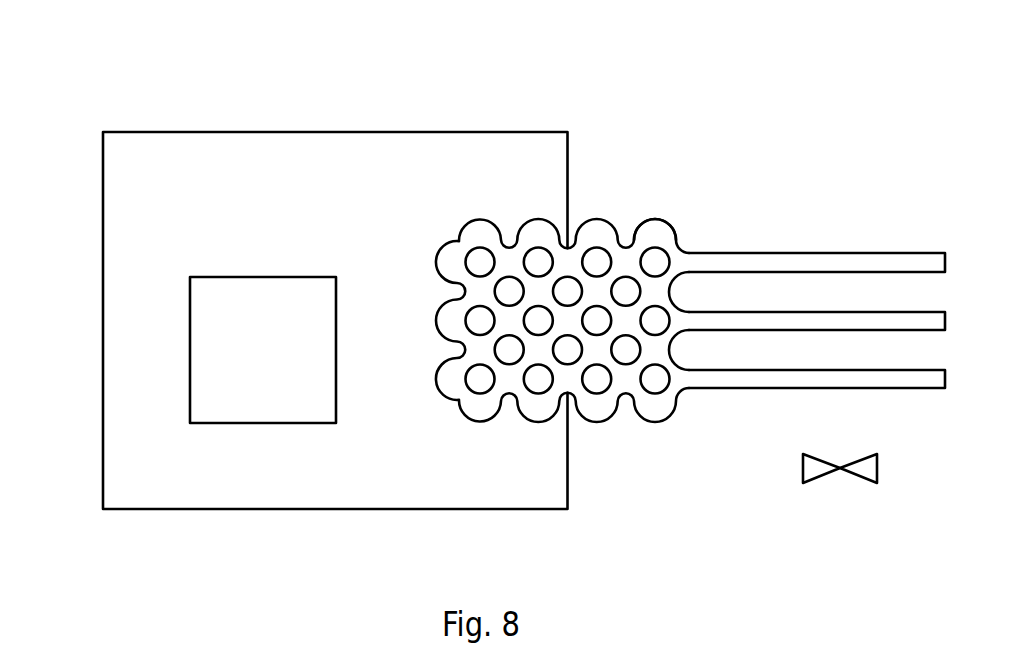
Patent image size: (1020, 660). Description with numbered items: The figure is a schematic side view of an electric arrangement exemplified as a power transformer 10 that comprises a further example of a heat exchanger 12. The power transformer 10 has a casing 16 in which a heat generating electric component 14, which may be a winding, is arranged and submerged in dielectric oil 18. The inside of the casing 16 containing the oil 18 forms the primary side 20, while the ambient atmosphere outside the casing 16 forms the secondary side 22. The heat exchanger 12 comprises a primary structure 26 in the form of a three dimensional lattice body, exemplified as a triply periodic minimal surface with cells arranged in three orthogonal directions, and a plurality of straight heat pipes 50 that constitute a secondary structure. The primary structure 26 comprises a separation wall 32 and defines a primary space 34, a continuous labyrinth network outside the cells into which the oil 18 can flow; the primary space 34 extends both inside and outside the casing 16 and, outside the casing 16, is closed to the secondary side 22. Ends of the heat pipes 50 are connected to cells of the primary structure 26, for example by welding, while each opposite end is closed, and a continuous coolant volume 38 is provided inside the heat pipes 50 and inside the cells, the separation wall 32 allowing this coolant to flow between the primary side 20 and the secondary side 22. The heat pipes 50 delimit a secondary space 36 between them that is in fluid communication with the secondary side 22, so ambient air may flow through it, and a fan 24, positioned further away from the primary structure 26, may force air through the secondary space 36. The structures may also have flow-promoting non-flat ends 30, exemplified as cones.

The power transformer 10 is at (227, 66).
The heat exchanger 12 is at (658, 146).
The electric component 14 is at (277, 363).
The casing 16 is at (103, 182).
The oil 18 is at (398, 491).
The primary side 20 is at (541, 173).
The secondary side 22 is at (919, 188).
The fan 24 is at (868, 466).
The primary structure 26 is at (477, 219).
The flow-promoting non-flat ends 30 is at (657, 219).
The separation wall 32 is at (673, 340).
The primary space 34 is at (480, 322).
The secondary space 36 is at (793, 304).
The coolant volume 38 is at (475, 297).
The heat pipes 50 is at (800, 262).